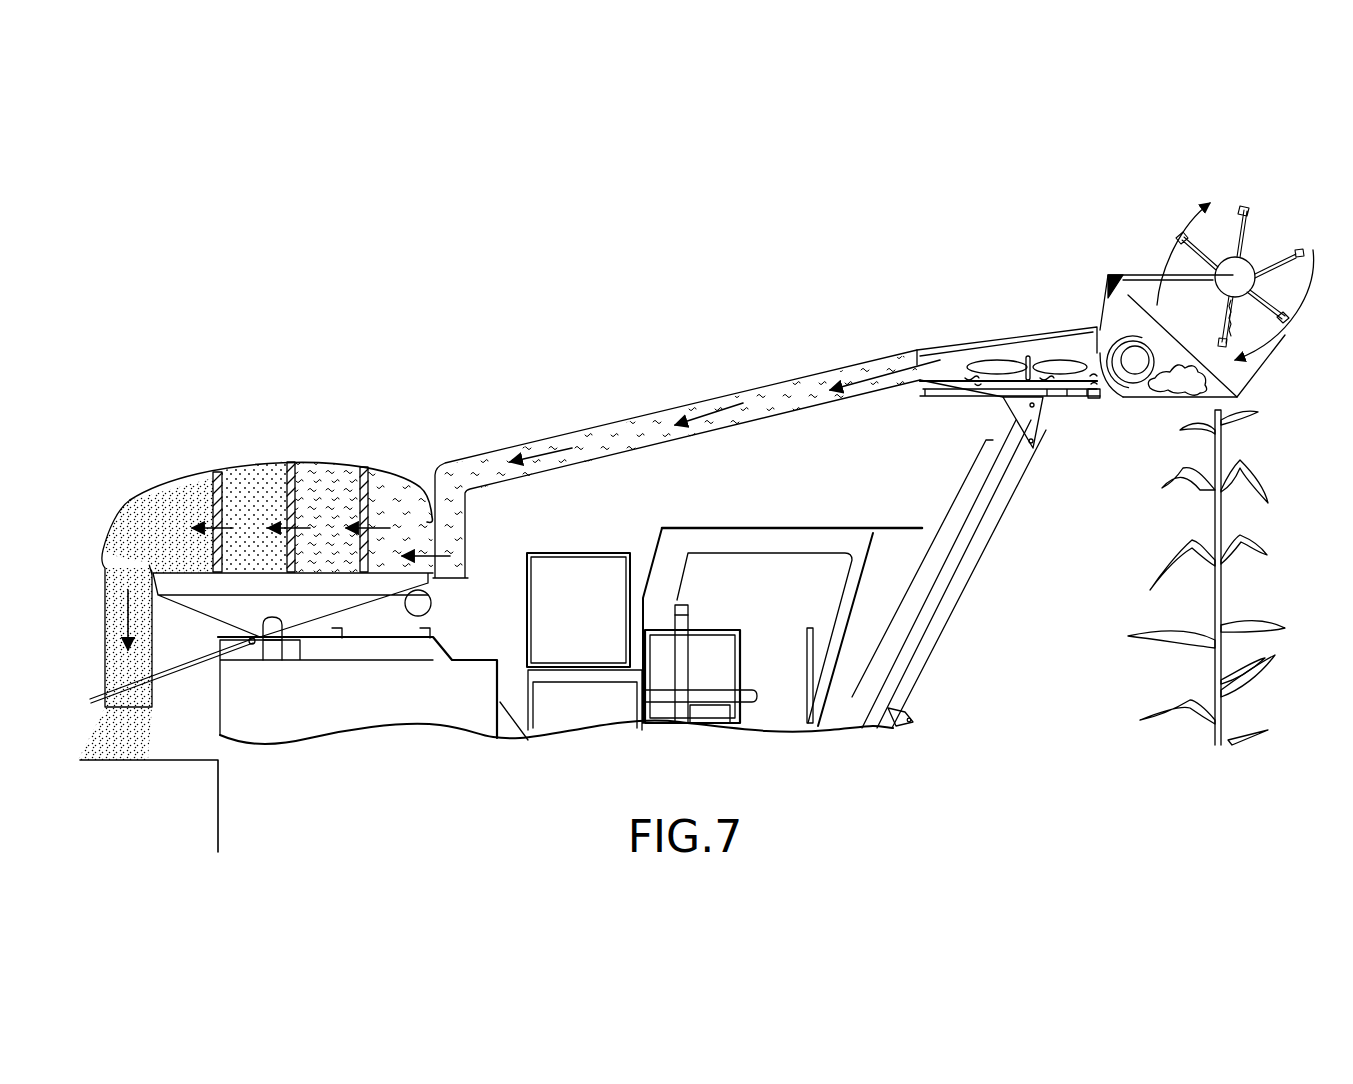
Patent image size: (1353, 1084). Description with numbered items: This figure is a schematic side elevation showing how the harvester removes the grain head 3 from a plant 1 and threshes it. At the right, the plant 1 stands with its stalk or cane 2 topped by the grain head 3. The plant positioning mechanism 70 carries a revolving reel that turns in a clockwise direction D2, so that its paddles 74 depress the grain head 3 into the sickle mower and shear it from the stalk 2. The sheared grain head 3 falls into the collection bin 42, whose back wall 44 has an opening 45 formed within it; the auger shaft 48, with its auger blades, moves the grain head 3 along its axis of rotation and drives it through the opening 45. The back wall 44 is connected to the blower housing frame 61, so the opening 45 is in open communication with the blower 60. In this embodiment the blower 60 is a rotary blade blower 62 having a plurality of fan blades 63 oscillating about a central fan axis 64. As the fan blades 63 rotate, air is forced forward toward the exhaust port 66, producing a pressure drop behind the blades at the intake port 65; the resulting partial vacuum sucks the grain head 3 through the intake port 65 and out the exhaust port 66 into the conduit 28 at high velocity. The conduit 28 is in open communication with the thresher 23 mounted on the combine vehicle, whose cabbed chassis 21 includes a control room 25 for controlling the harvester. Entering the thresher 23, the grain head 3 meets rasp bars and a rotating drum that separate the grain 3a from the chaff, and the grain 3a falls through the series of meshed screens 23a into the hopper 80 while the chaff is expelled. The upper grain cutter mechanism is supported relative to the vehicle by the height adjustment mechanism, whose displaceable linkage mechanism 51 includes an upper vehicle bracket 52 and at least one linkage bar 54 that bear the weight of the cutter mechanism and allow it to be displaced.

The plant 1 is at (1235, 530).
The stalk or cane 2 is at (1230, 665).
The grain head 3 is at (1170, 385).
The grain 3a is at (146, 500).
The cabbed chassis 21 is at (746, 520).
The thresher 23 is at (302, 462).
The meshed screens 23a is at (365, 490).
The control room 25 is at (812, 558).
The conduit 28 is at (570, 432).
The collection bin 42 is at (1237, 410).
The back wall 44 is at (1112, 330).
The opening 45 is at (1157, 305).
The auger shaft 48 is at (1152, 326).
The displaceable linkage mechanism 51 is at (992, 533).
The upper vehicle bracket 52 is at (1034, 432).
The linkage bar 54 is at (950, 568).
The blower 60 is at (1029, 357).
The blower housing frame 61 is at (1047, 328).
The rotary blade blower 62 is at (963, 365).
The fan blades 63 is at (1047, 400).
The central fan axis 64 is at (1003, 398).
The intake port 65 is at (1092, 385).
The exhaust port 66 is at (913, 364).
The plant positioning mechanism 70 is at (1256, 244).
The paddles 74 is at (1242, 205).
The hopper 80 is at (218, 818).
The clockwise direction D2 is at (1302, 330).